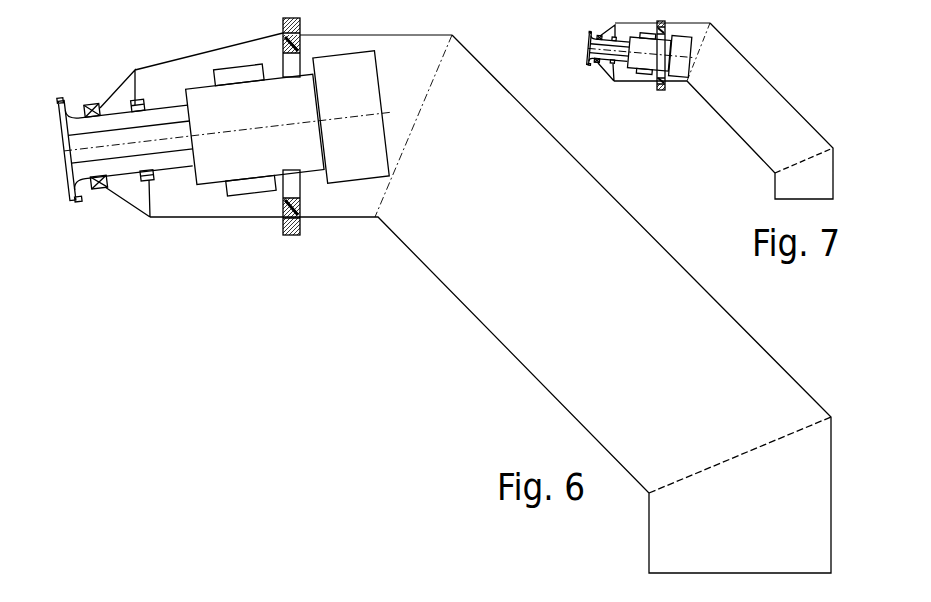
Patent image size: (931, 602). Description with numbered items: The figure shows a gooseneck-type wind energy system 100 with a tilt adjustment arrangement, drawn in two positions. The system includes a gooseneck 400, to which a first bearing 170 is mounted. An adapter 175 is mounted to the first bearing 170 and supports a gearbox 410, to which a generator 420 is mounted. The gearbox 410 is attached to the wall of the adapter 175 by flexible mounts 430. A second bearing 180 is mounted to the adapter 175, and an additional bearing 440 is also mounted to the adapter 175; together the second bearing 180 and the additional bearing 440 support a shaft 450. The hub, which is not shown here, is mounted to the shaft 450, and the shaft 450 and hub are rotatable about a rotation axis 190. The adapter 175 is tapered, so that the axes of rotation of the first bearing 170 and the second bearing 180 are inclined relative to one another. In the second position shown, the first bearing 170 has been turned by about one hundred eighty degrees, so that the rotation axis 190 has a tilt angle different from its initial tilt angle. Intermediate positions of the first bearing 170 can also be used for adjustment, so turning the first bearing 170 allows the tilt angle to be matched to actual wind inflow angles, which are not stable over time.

In FIG. 6, the gooseneck-type wind energy system 100 is at (410, 341).
In FIG. 6, the first bearing 170 is at (288, 236).
In FIG. 7, the first bearing 170 is at (661, 91).
In FIG. 6, the adapter 175 is at (170, 61).
In FIG. 6, the second bearing 180 is at (99, 190).
In FIG. 6, the rotation axis 190 is at (67, 150).
In FIG. 6, the gooseneck 400 is at (518, 361).
In FIG. 7, the gooseneck 400 is at (757, 155).
In FIG. 6, the gearbox 410 is at (211, 183).
In FIG. 6, the generator 420 is at (361, 180).
In FIG. 6, the flexible mounts 430 is at (232, 67).
In FIG. 6, the additional bearing 440 is at (143, 180).
In FIG. 6, the shaft 450 is at (78, 200).